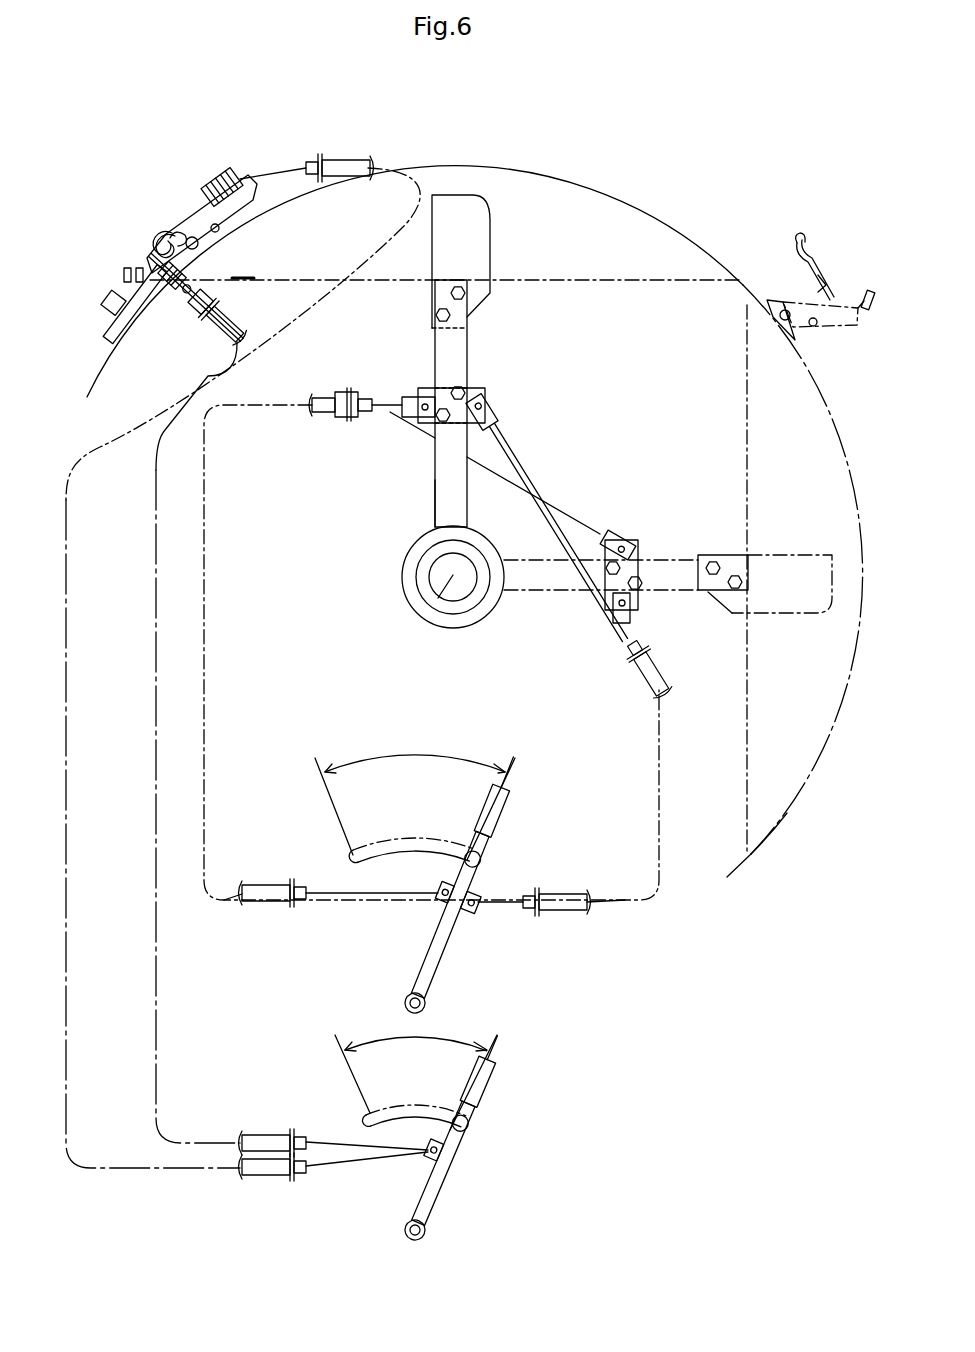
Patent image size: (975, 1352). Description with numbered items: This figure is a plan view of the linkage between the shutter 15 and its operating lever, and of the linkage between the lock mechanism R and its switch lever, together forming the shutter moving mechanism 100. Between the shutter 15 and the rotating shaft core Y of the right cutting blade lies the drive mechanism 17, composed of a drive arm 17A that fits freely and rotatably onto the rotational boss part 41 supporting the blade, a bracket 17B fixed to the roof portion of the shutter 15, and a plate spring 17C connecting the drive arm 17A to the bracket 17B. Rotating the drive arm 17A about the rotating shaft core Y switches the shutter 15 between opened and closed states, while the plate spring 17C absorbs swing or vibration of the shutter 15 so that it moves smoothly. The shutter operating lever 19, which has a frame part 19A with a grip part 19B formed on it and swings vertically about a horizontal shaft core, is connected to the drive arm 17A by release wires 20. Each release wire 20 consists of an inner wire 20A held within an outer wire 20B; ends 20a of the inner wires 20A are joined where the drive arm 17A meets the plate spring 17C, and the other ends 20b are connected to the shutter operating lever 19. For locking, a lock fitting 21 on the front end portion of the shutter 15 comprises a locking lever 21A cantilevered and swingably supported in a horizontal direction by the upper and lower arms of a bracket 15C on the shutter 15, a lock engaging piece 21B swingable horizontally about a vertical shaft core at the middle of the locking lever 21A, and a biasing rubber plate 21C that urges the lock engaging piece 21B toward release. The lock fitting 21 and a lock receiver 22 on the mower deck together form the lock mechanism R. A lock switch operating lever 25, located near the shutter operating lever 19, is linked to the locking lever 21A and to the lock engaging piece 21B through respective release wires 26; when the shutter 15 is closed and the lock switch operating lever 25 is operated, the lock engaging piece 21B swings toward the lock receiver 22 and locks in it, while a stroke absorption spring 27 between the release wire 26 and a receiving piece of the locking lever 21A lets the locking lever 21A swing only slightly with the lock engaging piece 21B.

The shutter moving mechanism 100 is at (478, 157).
The shutter 15 is at (545, 175).
The bracket 15C is at (237, 281).
The drive mechanism 17 is at (470, 343).
The drive arm 17A is at (452, 507).
The bracket 17B is at (473, 238).
The plate spring 17C is at (457, 367).
The shutter operating lever 19 is at (513, 837).
The frame part 19A is at (443, 937).
The grip part 19B is at (500, 820).
The release wire 20 is at (618, 408).
The inner wire 20A is at (390, 400).
The end of inner wire 20a is at (497, 417).
The outer wire 20B is at (323, 420).
The other end of inner wire 20b is at (438, 898).
The lock fitting 21 is at (150, 253).
The locking lever 21A is at (227, 213).
The lock engaging piece 21B is at (152, 255).
The biasing rubber plate 21C is at (170, 233).
The lock receiver 22 is at (133, 287).
The lock switch operating lever 25 is at (487, 1088).
The release wire 26 is at (267, 171).
The stroke absorption spring 27 is at (212, 173).
The rotational boss part 41 is at (427, 577).
The lock mechanism R is at (132, 227).
The rotating shaft core Y is at (430, 604).